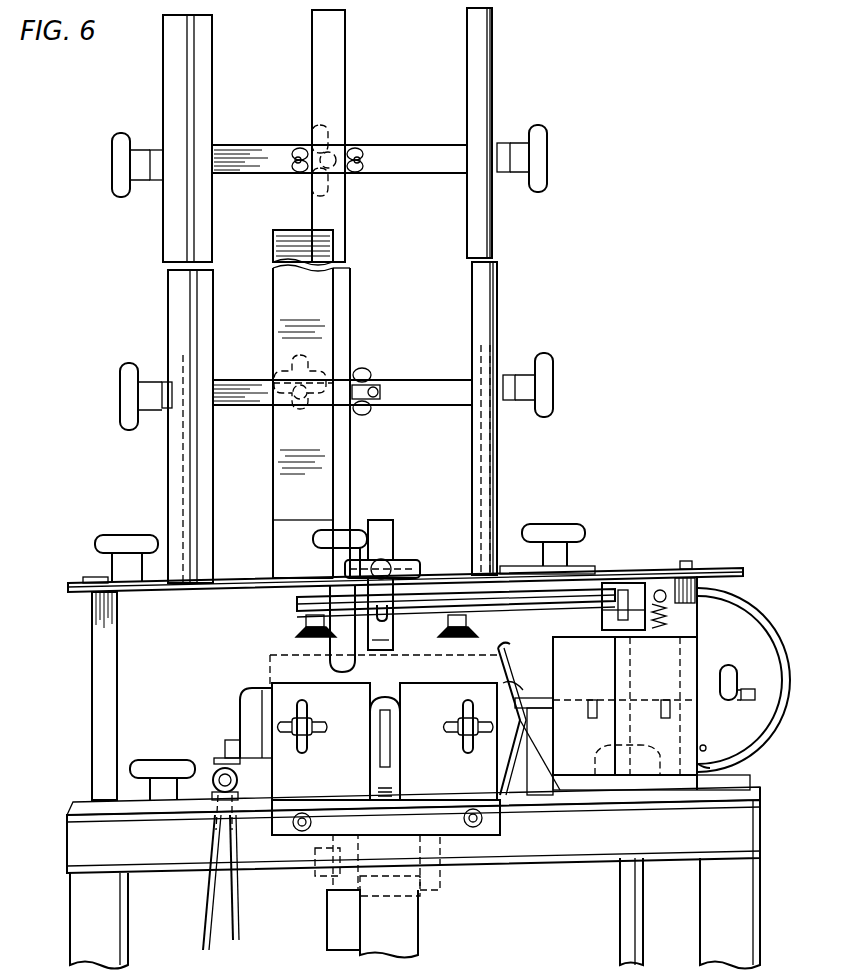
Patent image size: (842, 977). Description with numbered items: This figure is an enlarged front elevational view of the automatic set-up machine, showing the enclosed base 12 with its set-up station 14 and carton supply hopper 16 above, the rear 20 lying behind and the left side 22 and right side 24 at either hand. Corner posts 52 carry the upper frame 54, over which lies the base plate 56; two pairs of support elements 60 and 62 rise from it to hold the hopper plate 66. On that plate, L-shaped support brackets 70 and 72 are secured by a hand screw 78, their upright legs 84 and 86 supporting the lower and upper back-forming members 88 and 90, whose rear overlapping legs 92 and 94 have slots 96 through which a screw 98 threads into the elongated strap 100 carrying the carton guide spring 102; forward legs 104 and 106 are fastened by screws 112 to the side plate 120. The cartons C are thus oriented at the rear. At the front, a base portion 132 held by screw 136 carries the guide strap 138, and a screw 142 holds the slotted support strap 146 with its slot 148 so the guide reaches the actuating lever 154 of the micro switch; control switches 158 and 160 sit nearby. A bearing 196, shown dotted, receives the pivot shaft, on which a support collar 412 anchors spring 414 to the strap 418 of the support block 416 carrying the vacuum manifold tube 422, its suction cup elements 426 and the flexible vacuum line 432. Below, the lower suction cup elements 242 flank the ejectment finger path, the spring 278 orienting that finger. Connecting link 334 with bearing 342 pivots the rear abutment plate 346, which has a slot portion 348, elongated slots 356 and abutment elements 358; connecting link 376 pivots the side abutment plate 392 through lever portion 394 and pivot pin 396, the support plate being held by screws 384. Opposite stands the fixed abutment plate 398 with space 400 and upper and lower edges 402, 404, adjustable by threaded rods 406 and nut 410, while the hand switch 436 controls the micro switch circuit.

The enclosed base 12 is at (68, 920).
The set-up station 14 is at (188, 697).
The carton supply hopper 16 is at (500, 268).
The rear 20 is at (567, 862).
The left side 22 is at (68, 848).
The right side 24 is at (760, 833).
The posts 52 is at (115, 896).
The upper frame 54 is at (492, 862).
The base plate 56 is at (730, 785).
The support elements 60 is at (92, 723).
The support elements 62 is at (698, 575).
The hopper plate 66 is at (735, 568).
The L-shaped support bracket 70 is at (88, 578).
The L-shaped support bracket 72 is at (590, 566).
The hand manipulable retaining screw 78 is at (122, 540).
The upwardly extending leg 84 is at (204, 72).
The upwardly extending leg 86 is at (497, 440).
The lower back-forming member 88 is at (420, 380).
The upper back-forming member 90 is at (400, 145).
The rear overlapping leg 92 is at (430, 160).
The rear overlapping leg 94 is at (232, 150).
The elongated slot portions 96 is at (298, 160).
The hand manipulable retaining screw 98 is at (357, 150).
The elongated strap 100 is at (336, 62).
The carton guide spring 102 is at (330, 650).
The forwardly extending leg 104 is at (507, 143).
The forwardly extending leg 106 is at (155, 150).
The hand manipulable retaining screw 112 is at (115, 142).
The U-shaped side plate 120 is at (470, 50).
The base portion 132 is at (292, 565).
The hand manipulable retaining screw 136 is at (350, 535).
The guide strap 138 is at (318, 312).
The hand manipulable screw 142 is at (388, 530).
The support strap 146 is at (394, 632).
The elongated slot 148 is at (389, 614).
The actuating lever 154 is at (393, 785).
The control switch 158 is at (625, 706).
The control switch 160 is at (584, 706).
The bearing 196 is at (600, 765).
The suction cup elements 242 is at (318, 800).
The tension spring 278 is at (392, 712).
The connecting link 334 is at (240, 932).
The bearing portion 342 is at (230, 740).
The rear abutment plate 346 is at (312, 695).
The slot portion 348 is at (398, 700).
The elongated slots 356 is at (318, 730).
The angular abutment element 358 is at (308, 712).
The connecting link 376 is at (203, 934).
The hand manipulable retaining screws 384 is at (132, 766).
The side abutment plate 392 is at (250, 712).
The lever portion 394 is at (220, 760).
The pivot pin 396 is at (214, 772).
The fixed abutment plate 398 is at (510, 668).
The space 400 is at (520, 790).
The upper edge 402 is at (508, 648).
The lower edge 404 is at (498, 780).
The threaded support rods 406 is at (536, 700).
The hand manipulable retaining nut 410 is at (730, 675).
The support collar 412 is at (638, 625).
The spring 414 is at (672, 620).
The support block 416 is at (622, 583).
The elongated strap 418 is at (665, 590).
The vacuum manifold tube 422 is at (295, 604).
The suction cup elements 426 is at (296, 630).
The flexible vacuum line 432 is at (752, 616).
The hand manipulated switch 436 is at (750, 748).
The cartons C is at (268, 668).